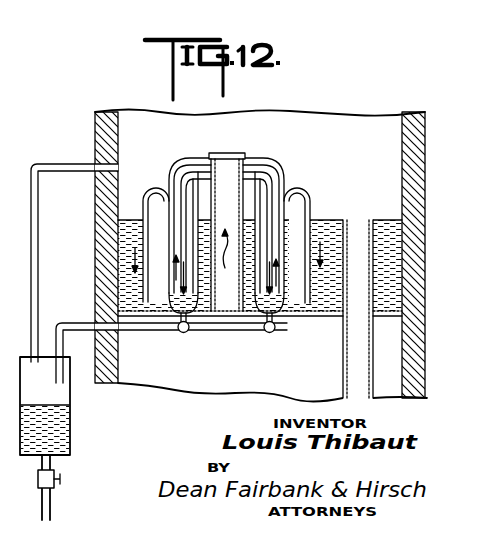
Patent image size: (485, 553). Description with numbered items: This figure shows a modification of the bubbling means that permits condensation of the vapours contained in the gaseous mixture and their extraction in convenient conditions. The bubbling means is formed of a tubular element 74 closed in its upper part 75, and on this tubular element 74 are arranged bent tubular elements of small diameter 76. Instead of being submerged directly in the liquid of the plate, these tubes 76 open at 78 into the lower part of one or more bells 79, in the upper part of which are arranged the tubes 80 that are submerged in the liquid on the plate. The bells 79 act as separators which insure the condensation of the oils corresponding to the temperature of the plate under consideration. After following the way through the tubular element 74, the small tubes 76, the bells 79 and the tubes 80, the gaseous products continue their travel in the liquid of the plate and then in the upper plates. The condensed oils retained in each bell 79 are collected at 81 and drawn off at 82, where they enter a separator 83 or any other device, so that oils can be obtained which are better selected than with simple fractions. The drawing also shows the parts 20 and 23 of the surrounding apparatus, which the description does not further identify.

The housing wall 20 is at (95, 125).
The inner cylinder 23 is at (343, 371).
The tubular element 74 is at (233, 177).
The upper part 75 is at (227, 153).
The tubular elements of small diameter 76 is at (266, 169).
The opening of the tubes 78 is at (265, 295).
The bell 79 is at (168, 188).
The tubes 80 is at (118, 237).
The collecting point 81 is at (271, 334).
The draw-off 82 is at (73, 323).
The separator 83 is at (70, 427).